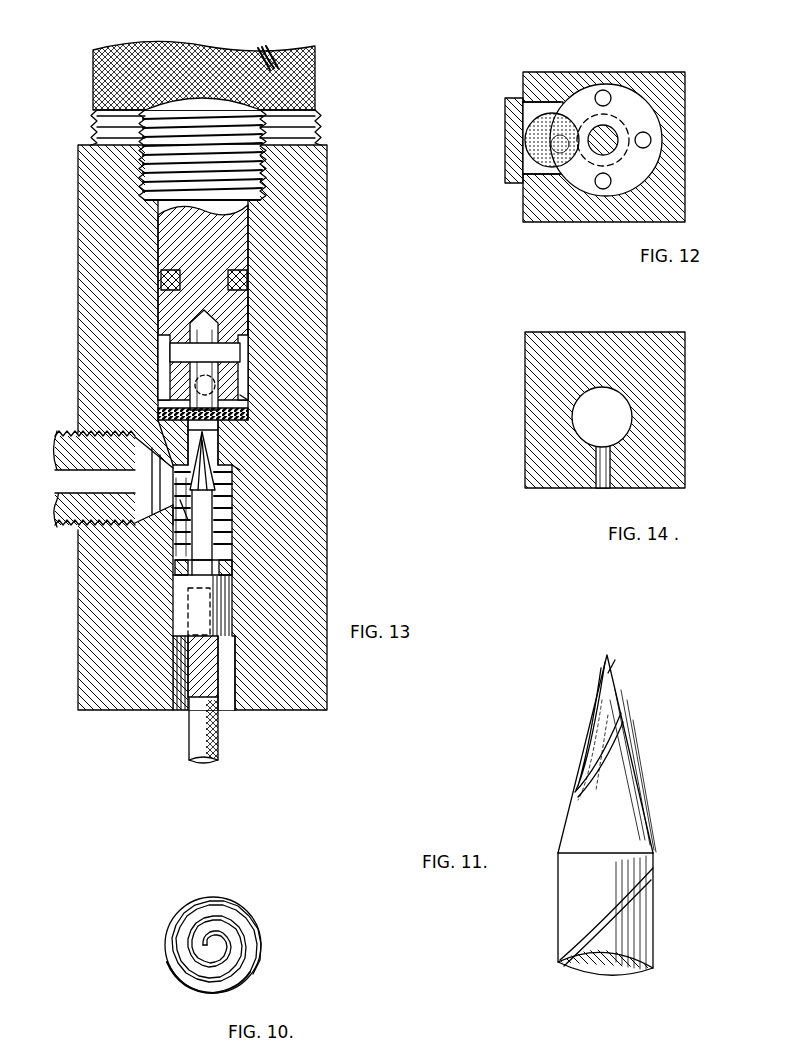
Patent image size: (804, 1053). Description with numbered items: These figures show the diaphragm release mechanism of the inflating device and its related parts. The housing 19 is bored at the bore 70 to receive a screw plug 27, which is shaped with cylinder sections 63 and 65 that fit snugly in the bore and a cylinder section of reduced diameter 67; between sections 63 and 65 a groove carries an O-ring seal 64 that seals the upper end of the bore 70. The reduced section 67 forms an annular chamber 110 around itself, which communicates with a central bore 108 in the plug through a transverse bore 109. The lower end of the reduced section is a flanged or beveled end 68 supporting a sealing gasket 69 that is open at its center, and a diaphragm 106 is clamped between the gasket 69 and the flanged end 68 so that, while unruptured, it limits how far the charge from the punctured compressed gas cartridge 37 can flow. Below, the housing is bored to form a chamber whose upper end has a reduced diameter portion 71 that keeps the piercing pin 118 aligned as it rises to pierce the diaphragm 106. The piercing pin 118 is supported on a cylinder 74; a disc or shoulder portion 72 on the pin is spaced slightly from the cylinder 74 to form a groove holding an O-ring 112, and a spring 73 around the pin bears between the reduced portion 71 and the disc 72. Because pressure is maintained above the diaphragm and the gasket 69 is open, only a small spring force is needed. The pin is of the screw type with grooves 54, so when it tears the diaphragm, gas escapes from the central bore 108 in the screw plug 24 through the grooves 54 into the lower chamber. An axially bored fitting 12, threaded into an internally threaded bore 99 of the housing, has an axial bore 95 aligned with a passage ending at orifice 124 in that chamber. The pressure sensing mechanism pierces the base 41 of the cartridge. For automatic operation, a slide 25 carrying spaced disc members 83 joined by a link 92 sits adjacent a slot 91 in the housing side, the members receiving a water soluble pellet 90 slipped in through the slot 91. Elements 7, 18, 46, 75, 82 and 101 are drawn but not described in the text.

In FIG. 13, the outlet passage 7 is at (236, 706).
In FIG. 13, the axially bored fitting 12 is at (70, 526).
In FIG. 13, the outlet tube 18 is at (214, 762).
In FIG. 13, the housing 19 is at (80, 146).
In FIG. 12, the housing 19 is at (523, 222).
In FIG. 14, the housing 19 is at (552, 336).
In FIG. 13, the screw plug 24 is at (300, 80).
In FIG. 12, the slide 25 is at (507, 170).
In FIG. 13, the screw plug 27 is at (186, 106).
In FIG. 13, the compressed gas cartridge 37 is at (266, 48).
In FIG. 14, the base of the compressed gas cartridge 41 is at (620, 416).
In FIG. 13, the slot passage 46 is at (250, 370).
In FIG. 14, the slot passage 46 is at (606, 470).
In FIG. 11, the grooves 54 is at (616, 728).
In FIG. 10, the grooves 54 is at (200, 957).
In FIG. 13, the cylinder section 63 is at (222, 265).
In FIG. 13, the O-ring seal 64 is at (240, 282).
In FIG. 13, the cylinder section 65 is at (238, 314).
In FIG. 13, the cylinder section of reduced diameter 67 is at (200, 386).
In FIG. 13, the flanged or beveled end 68 is at (247, 398).
In FIG. 13, the sealing gasket 69 is at (232, 440).
In FIG. 13, the bore 70 is at (248, 236).
In FIG. 13, the reduced diameter portion 71 is at (178, 430).
In FIG. 13, the disc or shoulder portion 72 is at (236, 553).
In FIG. 13, the spring 73 is at (192, 532).
In FIG. 13, the cylinder 74 is at (182, 621).
In FIG. 13, the plug 75 is at (196, 688).
In FIG. 12, the dashed recess circle 82 is at (660, 116).
In FIG. 12, the disc member 83 is at (650, 118).
In FIG. 12, the water soluble pellet 90 is at (538, 140).
In FIG. 12, the slot 91 is at (545, 88).
In FIG. 12, the link 92 is at (618, 154).
In FIG. 13, the axial bore 95 is at (70, 484).
In FIG. 13, the internally threaded bore 99 is at (190, 437).
In FIG. 12, the hole 101 is at (603, 188).
In FIG. 13, the diaphragm 106 is at (242, 414).
In FIG. 13, the central bore 108 is at (214, 331).
In FIG. 13, the transverse bore 109 is at (170, 340).
In FIG. 13, the annular chamber 110 is at (205, 351).
In FIG. 13, the O-ring 112 is at (232, 568).
In FIG. 13, the piercing pin 118 is at (205, 517).
In FIG. 11, the piercing pin 118 is at (640, 932).
In FIG. 10, the piercing pin 118 is at (222, 898).
In FIG. 13, the orifice 124 is at (186, 522).